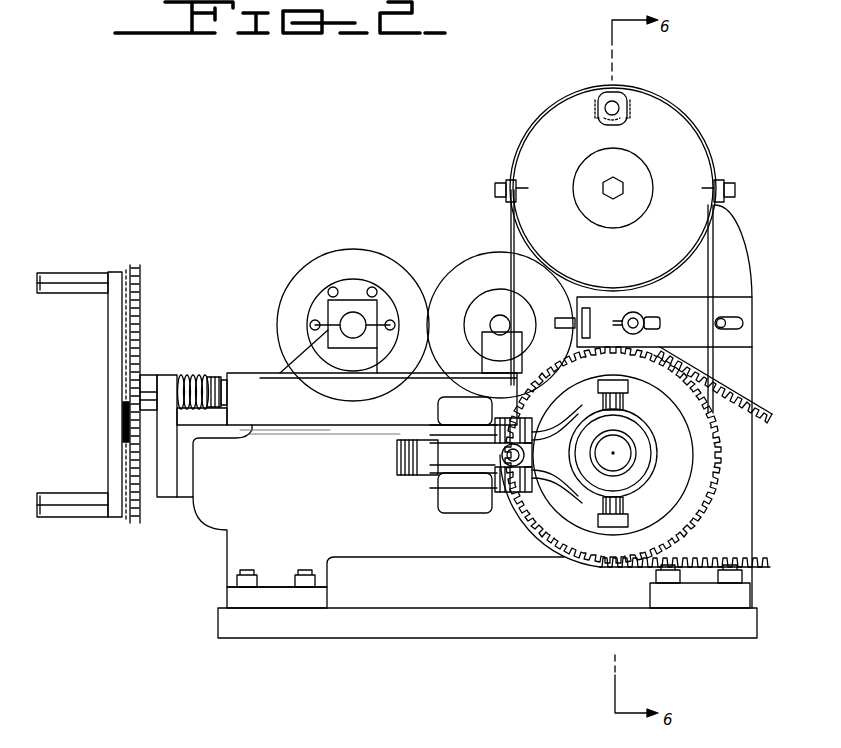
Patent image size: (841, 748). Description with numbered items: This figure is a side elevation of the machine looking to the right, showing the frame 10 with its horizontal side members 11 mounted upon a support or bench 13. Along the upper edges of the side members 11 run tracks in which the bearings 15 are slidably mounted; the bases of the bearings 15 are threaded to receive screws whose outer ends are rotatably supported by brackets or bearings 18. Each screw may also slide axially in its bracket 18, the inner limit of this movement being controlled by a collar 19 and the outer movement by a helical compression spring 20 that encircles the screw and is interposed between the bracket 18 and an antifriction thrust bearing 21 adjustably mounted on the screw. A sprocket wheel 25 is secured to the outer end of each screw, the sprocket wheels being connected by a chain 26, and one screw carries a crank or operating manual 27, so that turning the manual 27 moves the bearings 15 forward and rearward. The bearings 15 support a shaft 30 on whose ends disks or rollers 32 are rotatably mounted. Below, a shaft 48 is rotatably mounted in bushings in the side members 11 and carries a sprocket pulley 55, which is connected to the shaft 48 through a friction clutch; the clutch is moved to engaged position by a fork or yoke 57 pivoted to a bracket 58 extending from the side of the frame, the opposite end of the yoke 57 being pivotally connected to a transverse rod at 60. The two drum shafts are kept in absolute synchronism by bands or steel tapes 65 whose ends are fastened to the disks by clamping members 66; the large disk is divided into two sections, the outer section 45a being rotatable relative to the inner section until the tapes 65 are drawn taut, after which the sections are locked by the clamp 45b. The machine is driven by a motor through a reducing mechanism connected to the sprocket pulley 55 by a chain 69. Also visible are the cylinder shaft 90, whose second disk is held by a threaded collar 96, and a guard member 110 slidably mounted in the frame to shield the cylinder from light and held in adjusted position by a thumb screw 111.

The frame 10 is at (218, 579).
The side members 11 is at (232, 522).
The support or bench 13 is at (470, 630).
The bearings 15 is at (336, 366).
The brackets or bearings 18 is at (167, 378).
The collar 19 is at (143, 377).
The helical compression spring 20 is at (198, 370).
The antifriction thrust bearing 21 is at (215, 377).
The sprocket wheel 25 is at (140, 308).
The chain 26 is at (130, 520).
The crank or operating manual 27 is at (113, 447).
The shaft 30 is at (350, 318).
The disks or rollers 32 is at (317, 262).
The outer section of disk 45a is at (678, 133).
The clamp 45b is at (604, 116).
The shaft 48 is at (623, 448).
The sprocket pulley 55 is at (720, 452).
The fork or yoke 57 is at (573, 492).
The bracket 58 is at (463, 503).
The pivotal connection 60 is at (411, 477).
The bands or steel tapes 65 is at (511, 267).
The clamping members 66 is at (511, 181).
The chain 69 is at (755, 405).
The shaft 90 is at (498, 317).
The threaded collar 96 is at (472, 320).
The guard members 110 is at (590, 320).
The thumb screws 111 is at (562, 320).